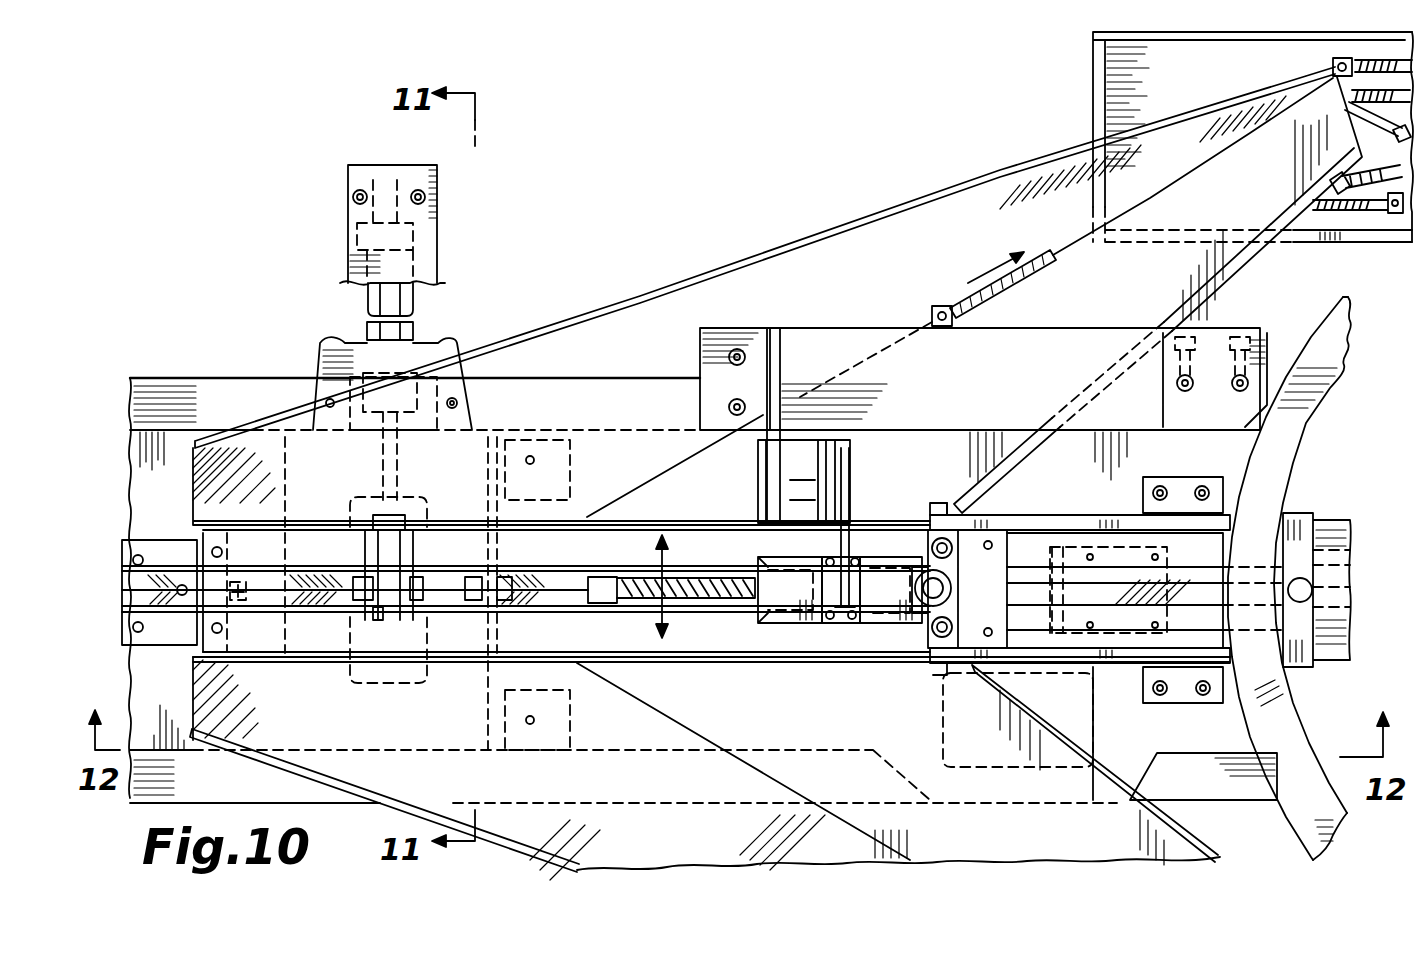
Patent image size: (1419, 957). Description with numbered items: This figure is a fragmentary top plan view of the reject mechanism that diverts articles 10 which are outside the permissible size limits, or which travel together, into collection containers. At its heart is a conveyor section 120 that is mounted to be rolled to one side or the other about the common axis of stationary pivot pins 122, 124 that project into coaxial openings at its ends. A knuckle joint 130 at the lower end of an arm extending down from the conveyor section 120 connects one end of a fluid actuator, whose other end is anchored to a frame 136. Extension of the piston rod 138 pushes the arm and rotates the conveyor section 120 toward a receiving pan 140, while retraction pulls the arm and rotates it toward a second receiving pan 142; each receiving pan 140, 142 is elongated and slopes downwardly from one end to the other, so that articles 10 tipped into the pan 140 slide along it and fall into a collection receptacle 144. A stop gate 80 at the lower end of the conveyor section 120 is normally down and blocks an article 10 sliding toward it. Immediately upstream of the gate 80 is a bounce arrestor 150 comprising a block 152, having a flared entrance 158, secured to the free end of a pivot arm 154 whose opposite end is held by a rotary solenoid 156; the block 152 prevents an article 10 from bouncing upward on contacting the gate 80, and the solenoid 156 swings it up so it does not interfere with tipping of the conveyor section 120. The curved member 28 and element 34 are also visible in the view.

The article 10 is at (632, 565).
The curved track 28 is at (1323, 327).
The bolt 34 is at (353, 298).
The stop gate 80 is at (960, 560).
The conveyor section 120 is at (631, 638).
The pivot pin 122 is at (217, 607).
The pivot pin 124 is at (1029, 598).
The knuckle joint 130 is at (340, 676).
The frame 136 is at (397, 170).
The piston rod 138 is at (390, 461).
The receiving pan 140 is at (615, 337).
The receiving pan 142 is at (315, 758).
The collection receptacle 144 is at (1112, 80).
The bounce arrestor 150 is at (863, 605).
The block 152 is at (802, 603).
The pivot arm 154 is at (847, 540).
The rotary solenoid 156 is at (803, 453).
The flared entrance 158 is at (742, 625).